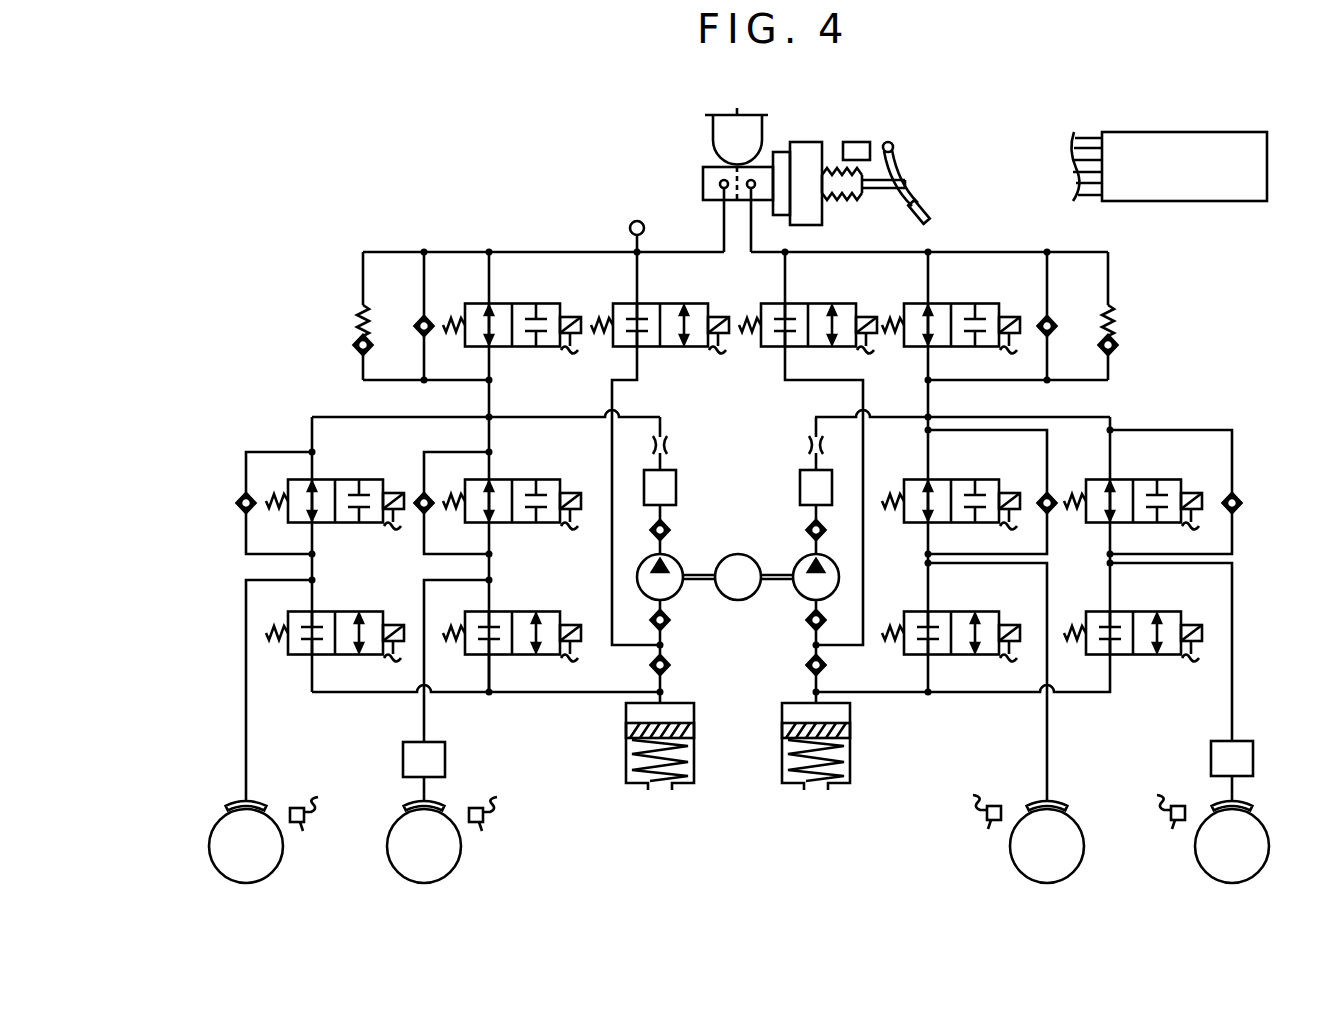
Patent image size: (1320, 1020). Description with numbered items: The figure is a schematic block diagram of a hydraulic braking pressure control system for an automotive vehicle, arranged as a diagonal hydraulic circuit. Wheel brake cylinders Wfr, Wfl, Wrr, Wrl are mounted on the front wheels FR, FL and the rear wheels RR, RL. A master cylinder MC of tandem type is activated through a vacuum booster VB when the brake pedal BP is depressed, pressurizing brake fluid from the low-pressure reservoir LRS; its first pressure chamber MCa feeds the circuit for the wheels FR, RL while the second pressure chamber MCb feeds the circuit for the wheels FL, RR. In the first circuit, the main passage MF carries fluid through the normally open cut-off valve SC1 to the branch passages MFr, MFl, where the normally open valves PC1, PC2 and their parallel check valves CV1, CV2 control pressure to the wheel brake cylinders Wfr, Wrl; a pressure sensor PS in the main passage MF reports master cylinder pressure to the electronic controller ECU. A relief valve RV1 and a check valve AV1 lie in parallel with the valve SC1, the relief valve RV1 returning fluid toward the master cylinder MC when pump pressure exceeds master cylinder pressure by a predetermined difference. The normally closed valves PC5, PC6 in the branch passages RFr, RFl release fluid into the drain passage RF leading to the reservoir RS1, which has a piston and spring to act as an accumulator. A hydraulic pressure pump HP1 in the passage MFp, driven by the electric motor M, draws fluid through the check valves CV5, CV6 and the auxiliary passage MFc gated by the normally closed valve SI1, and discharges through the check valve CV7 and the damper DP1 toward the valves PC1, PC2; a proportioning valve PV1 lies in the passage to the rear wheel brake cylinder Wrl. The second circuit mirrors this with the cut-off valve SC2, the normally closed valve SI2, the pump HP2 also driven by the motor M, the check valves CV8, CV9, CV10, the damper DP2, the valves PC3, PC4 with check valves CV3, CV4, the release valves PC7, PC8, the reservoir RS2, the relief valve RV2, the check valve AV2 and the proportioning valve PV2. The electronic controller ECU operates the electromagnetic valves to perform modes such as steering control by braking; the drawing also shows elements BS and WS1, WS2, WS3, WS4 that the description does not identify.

The low-pressure reservoir LRS is at (716, 138).
The master cylinder MC is at (703, 178).
The first pressure chamber MCa is at (706, 202).
The second pressure chamber MCb is at (765, 202).
The vacuum booster VB is at (824, 216).
The brake switch BS is at (855, 141).
The brake pedal BP is at (907, 186).
The pressure sensor PS is at (630, 227).
The relief valve RV1 is at (359, 322).
The check valve AV1 is at (421, 323).
The normally open two-port two-position electromagnetic switching valve SC1 is at (511, 303).
The normally closed two-port two-position electromagnetic switching valve SI1 is at (658, 303).
The normally closed two-port two-position electromagnetic switching valve SI2 is at (806, 303).
The normally open two-port two-position electromagnetic switching valve SC2 is at (952, 303).
The check valve AV2 is at (1050, 322).
The relief valve RV2 is at (1112, 322).
The main passage MF is at (488, 406).
The auxiliary passage MFc is at (612, 408).
The passage MFp is at (661, 426).
The branch passage MFr is at (313, 441).
The branch passage MFl is at (490, 441).
The damper DP1 is at (676, 493).
The damper DP2 is at (800, 493).
The check valve CV7 is at (668, 530).
The check valve CV10 is at (808, 530).
The hydraulic pressure pump HP1 is at (681, 559).
The pressure pump HP2 is at (795, 559).
The electric motor M is at (738, 577).
The check valve CV6 is at (668, 620).
The check valve CV9 is at (808, 620).
The check valve CV5 is at (668, 665).
The check valve CV8 is at (808, 665).
The reservoir RS1 is at (626, 733).
The reservoir RS2 is at (850, 733).
The check valve CV1 is at (247, 494).
The check valve CV2 is at (425, 494).
The check valve CV3 is at (1047, 494).
The check valve CV4 is at (1232, 494).
The normally open two-port two-position electromagnetic switching valve PC1 is at (334, 480).
The normally open two-port two-position electromagnetic switching valve PC2 is at (512, 480).
The normally open two-port two-position electromagnetic switching valve PC3 is at (951, 480).
The normally open two-port two-position electromagnetic switching valve PC4 is at (1134, 480).
The normally closed two-port two-position electromagnetic switching valve PC5 is at (334, 612).
The normally closed two-port two-position electromagnetic switching valve PC6 is at (512, 612).
The normally closed two-port two-position electromagnetic switching valve PC7 is at (951, 612).
The normally closed two-port two-position electromagnetic switching valve PC8 is at (1134, 612).
The branch passage RFr is at (355, 693).
The branch passage RFl is at (490, 676).
The drain passage RF is at (511, 693).
The proportioning valve PV1 is at (403, 758).
The proportioning valve PV2 is at (1211, 761).
The wheel brake cylinder Wfr is at (226, 806).
The wheel brake cylinder Wrl is at (405, 806).
The wheel brake cylinder Wfl is at (1068, 806).
The wheel brake cylinder Wrr is at (1253, 806).
The front right wheel FR is at (246, 846).
The rear left wheel RL is at (424, 846).
The front left wheel FL is at (1047, 846).
The rear right wheel RR is at (1232, 846).
The wheel speed sensor WS1 is at (317, 827).
The wheel speed sensor WS2 is at (496, 827).
The wheel speed sensor WS3 is at (972, 826).
The wheel speed sensor WS4 is at (1162, 826).
The electronic controller ECU is at (1169, 166).